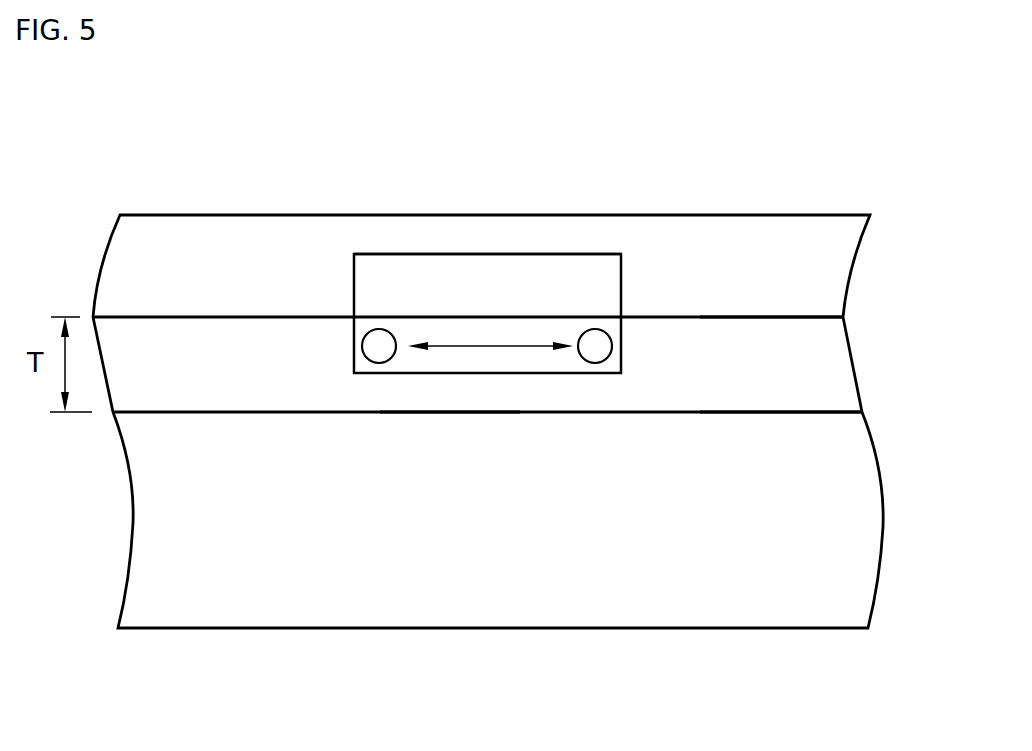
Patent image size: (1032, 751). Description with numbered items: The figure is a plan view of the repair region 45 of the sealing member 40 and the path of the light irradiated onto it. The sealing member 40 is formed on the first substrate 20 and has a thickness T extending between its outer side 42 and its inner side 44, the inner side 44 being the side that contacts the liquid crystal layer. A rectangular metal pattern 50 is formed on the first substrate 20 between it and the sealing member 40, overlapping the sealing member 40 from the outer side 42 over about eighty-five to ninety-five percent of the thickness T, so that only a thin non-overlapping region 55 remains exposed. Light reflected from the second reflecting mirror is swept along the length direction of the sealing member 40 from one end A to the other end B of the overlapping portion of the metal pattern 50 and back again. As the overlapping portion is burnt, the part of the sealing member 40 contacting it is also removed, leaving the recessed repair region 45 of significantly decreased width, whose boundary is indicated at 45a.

The first substrate 20 is at (723, 227).
The sealing member 40 is at (830, 362).
The outer side of the sealing member 42 is at (808, 318).
The inner side of the sealing member 44 is at (838, 412).
The repair region 45 is at (538, 367).
The portion of layer 45a is at (447, 397).
The metal pattern 50 is at (572, 283).
The non-overlapping region 55 is at (413, 257).